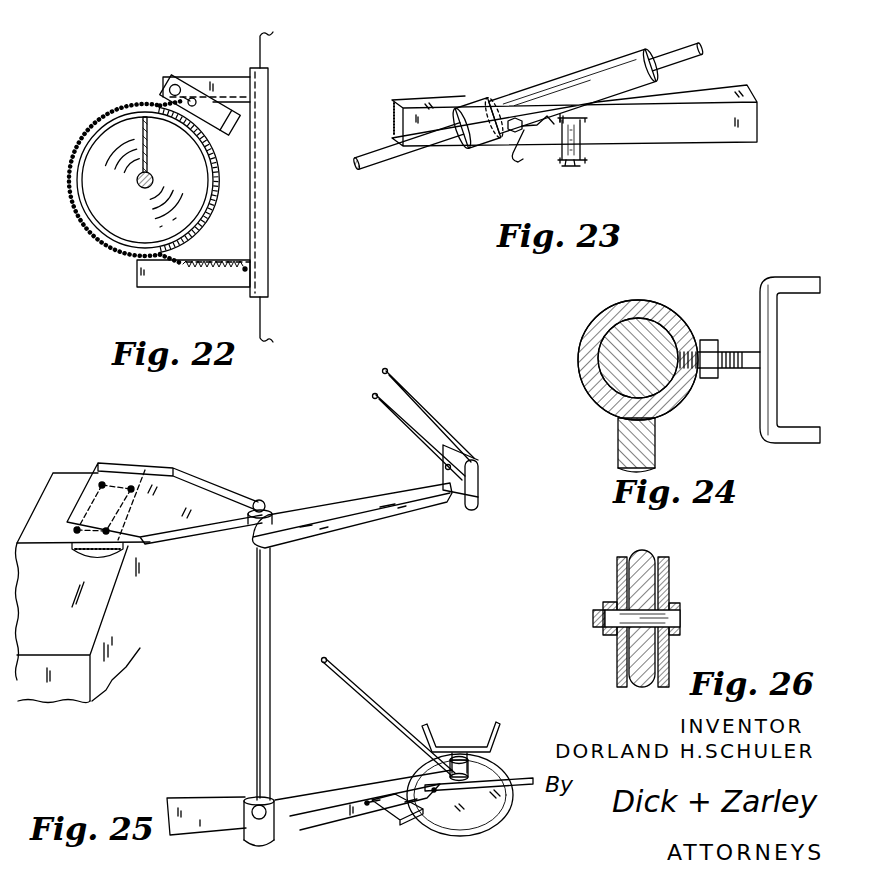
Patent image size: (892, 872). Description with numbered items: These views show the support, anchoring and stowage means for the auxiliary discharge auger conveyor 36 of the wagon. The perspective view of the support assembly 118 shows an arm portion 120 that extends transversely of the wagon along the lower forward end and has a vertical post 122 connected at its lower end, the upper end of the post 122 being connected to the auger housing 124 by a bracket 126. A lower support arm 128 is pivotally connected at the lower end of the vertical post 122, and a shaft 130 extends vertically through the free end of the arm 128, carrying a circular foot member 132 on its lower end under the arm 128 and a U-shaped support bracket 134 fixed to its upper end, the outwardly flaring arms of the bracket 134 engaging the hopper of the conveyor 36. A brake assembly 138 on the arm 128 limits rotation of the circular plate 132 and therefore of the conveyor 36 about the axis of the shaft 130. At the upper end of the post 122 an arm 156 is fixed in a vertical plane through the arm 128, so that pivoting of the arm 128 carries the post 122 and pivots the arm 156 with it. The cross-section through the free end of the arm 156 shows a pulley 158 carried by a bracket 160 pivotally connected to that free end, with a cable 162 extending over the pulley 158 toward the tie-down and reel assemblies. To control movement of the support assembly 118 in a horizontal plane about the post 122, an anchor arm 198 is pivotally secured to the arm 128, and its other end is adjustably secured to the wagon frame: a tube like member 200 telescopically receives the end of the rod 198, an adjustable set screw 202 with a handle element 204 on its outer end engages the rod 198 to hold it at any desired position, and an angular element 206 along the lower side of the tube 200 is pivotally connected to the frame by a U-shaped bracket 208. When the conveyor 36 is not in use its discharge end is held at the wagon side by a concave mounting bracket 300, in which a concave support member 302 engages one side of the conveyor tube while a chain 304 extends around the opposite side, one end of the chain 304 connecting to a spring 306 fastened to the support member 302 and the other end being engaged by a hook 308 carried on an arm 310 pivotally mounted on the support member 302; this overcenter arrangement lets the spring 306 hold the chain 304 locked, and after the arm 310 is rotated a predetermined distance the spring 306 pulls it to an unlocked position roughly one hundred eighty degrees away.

In FIG. 22, the auxiliary discharge auger conveyor 36 is at (83, 222).
In FIG. 22, the concave mounting bracket 300 is at (136, 60).
In FIG. 22, the concave support member 302 is at (237, 232).
In FIG. 22, the chain 304 is at (110, 247).
In FIG. 22, the spring 306 is at (197, 270).
In FIG. 22, the hook 308 is at (193, 100).
In FIG. 22, the arm 310 is at (225, 105).
In FIG. 23, the anchor arm 198 is at (700, 45).
In FIG. 24, the anchor arm 198 is at (607, 350).
In FIG. 25, the anchor arm 198 is at (337, 670).
In FIG. 23, the tube like member 200 is at (550, 78).
In FIG. 24, the tube like member 200 is at (635, 298).
In FIG. 24, the adjustable set screw 202 is at (745, 350).
In FIG. 23, the handle element 204 is at (507, 158).
In FIG. 24, the handle element 204 is at (760, 415).
In FIG. 23, the angular element 206 is at (583, 142).
In FIG. 24, the angular element 206 is at (625, 438).
In FIG. 23, the U-shaped bracket 208 is at (563, 178).
In FIG. 25, the support assembly 118 is at (154, 731).
In FIG. 25, the arm portion 120 is at (197, 802).
In FIG. 25, the vertical post 122 is at (272, 637).
In FIG. 25, the housing 124 is at (70, 482).
In FIG. 25, the bracket 126 is at (182, 516).
In FIG. 25, the lower support arm 128 is at (310, 793).
In FIG. 25, the shaft 130 is at (470, 760).
In FIG. 25, the circular foot member 132 is at (498, 813).
In FIG. 25, the U-shaped support bracket 134 is at (497, 728).
In FIG. 25, the brake assembly 138 is at (387, 815).
In FIG. 25, the arm 156 is at (335, 510).
In FIG. 26, the pulley 158 is at (647, 592).
In FIG. 25, the bracket 160 is at (473, 460).
In FIG. 26, the bracket 160 is at (668, 562).
In FIG. 25, the cable 162 is at (405, 383).
In FIG. 26, the cable 162 is at (642, 687).